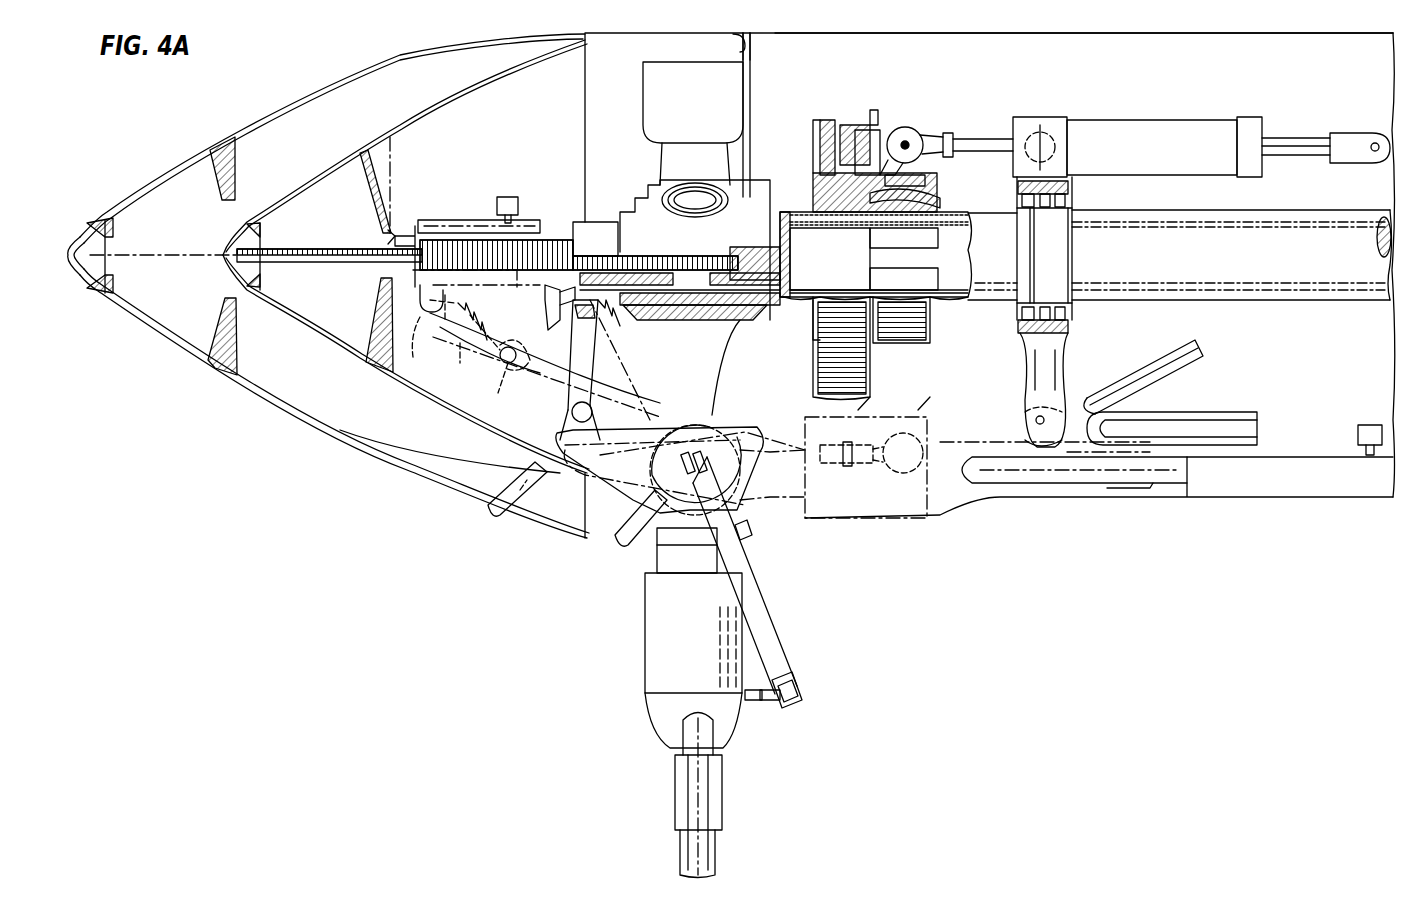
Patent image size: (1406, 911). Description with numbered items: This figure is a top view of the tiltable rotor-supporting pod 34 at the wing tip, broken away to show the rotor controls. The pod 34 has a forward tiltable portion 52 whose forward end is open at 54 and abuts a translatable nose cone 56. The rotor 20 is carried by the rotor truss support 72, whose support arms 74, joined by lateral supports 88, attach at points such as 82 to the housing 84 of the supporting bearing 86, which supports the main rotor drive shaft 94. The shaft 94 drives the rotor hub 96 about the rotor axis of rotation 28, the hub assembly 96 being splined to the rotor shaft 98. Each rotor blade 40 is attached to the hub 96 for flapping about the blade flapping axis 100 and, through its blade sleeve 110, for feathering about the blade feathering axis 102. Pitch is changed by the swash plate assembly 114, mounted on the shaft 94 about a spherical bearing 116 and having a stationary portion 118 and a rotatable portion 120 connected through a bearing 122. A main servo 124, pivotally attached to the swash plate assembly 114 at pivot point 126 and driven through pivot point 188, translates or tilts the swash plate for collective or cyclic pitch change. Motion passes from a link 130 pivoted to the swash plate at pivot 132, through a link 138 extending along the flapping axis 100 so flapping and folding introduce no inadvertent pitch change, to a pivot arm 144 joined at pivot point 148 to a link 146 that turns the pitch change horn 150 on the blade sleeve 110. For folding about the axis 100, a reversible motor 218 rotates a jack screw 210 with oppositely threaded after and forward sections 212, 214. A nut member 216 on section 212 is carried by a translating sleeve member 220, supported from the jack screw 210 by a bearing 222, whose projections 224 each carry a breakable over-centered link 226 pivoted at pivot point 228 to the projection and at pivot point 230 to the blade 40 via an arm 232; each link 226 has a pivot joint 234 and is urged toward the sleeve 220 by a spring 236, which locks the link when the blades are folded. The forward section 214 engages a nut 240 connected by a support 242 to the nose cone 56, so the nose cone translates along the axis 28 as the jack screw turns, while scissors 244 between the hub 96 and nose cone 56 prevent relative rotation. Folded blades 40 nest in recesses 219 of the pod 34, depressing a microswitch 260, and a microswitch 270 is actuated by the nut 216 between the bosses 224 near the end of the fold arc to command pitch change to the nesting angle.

The rotor 20 is at (775, 792).
The rotor axis of rotation 28 is at (212, 250).
The pod 34 is at (1353, 48).
The rotor blade 40 is at (716, 875).
The tiltable portion of pod 52 is at (1193, 16).
The open forward end of pod 54 is at (776, 40).
The translatable nose cone 56 is at (383, 58).
The rotor truss support 72 is at (1224, 410).
The support arm 74 is at (1252, 436).
The attachment point 82 is at (1034, 421).
The bearing housing 84 is at (1066, 354).
The supporting bearing 86 is at (1073, 191).
The lateral support 88 is at (1197, 358).
The main rotor drive shaft 94 is at (1360, 196).
The rotor hub 96 is at (754, 186).
The rotor shaft 98 is at (713, 306).
The blade flapping axis 100 is at (705, 470).
The blade feathering axis 102 is at (702, 782).
The blade sleeve 110 is at (663, 715).
The swash plate assembly 114 is at (815, 105).
The spherical bearing 116 is at (941, 196).
The stationary portion of swash plate 118 is at (913, 128).
The rotatable portion of swash plate 120 is at (846, 106).
The bearing 122 is at (856, 126).
The main servo 124 is at (1190, 120).
The pivot point 126 is at (950, 133).
The link 130 is at (840, 462).
The pivot 132 is at (905, 424).
The link 138 is at (690, 466).
The pivot arm 144 is at (778, 629).
The link 146 is at (790, 707).
The pivot point 148 is at (803, 700).
The pitch change horn 150 is at (762, 703).
The pivot point 188 is at (1385, 134).
The jack screw 210 is at (540, 239).
The after section of jack screw 212 is at (561, 240).
The forward section of jack screw 214 is at (314, 248).
The nut member 216 is at (611, 262).
The reversible motor 218 is at (866, 268).
The recess 219 is at (1303, 459).
The translating sleeve member 220 is at (931, 292).
The bearing 222 is at (741, 258).
The projection 224 is at (584, 310).
The breakable over-centered link 226 is at (605, 357).
The pivot point 228 is at (586, 336).
The pivot point 230 is at (760, 430).
The arm 232 is at (749, 463).
The pivot joint 234 is at (574, 412).
The spring 236 is at (474, 316).
The nut 240 is at (396, 228).
The support 242 is at (222, 310).
The scissors 244 is at (521, 481).
The microswitch 260 is at (1382, 412).
The microswitch 270 is at (508, 197).